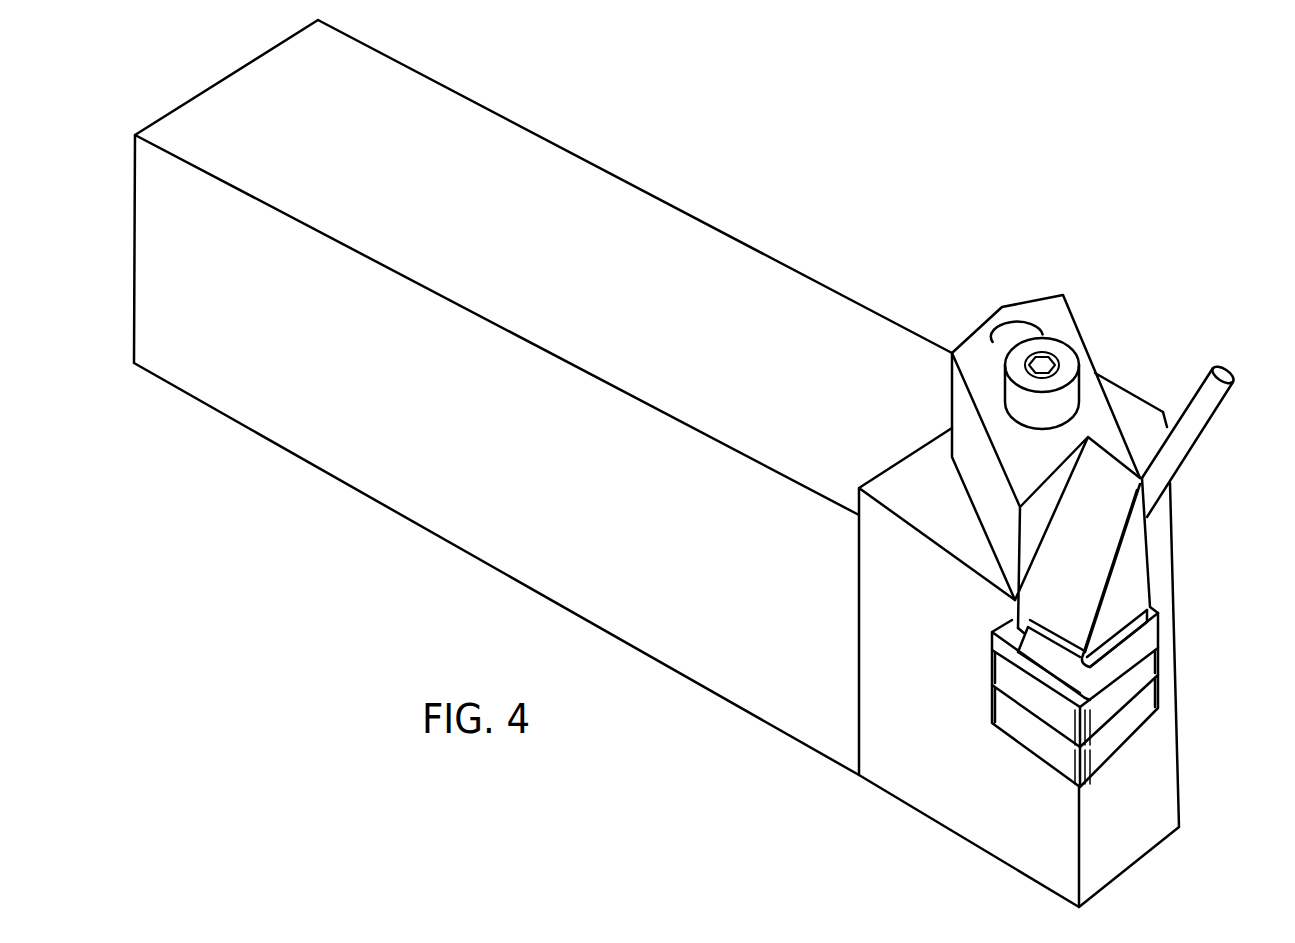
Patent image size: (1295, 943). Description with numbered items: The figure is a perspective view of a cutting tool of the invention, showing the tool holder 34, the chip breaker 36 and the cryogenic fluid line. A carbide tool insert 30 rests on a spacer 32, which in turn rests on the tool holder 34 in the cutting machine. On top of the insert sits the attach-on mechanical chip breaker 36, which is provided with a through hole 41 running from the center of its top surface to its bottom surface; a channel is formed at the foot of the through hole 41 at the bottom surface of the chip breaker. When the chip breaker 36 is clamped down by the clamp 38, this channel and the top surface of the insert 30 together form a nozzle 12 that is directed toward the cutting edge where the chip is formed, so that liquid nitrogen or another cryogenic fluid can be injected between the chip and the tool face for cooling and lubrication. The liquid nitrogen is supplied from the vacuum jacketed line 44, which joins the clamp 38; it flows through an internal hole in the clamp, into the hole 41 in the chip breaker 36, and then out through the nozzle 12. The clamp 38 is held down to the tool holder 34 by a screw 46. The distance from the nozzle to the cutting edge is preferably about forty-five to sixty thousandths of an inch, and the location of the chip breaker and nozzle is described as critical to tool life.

The nozzle 12 is at (1073, 707).
The carbide tool insert 30 is at (1152, 665).
The spacer 32 is at (1148, 703).
The tool holder 34 is at (568, 153).
The attach-on mechanical chip breaker 36 is at (1150, 632).
The clamp 38 is at (1147, 563).
The through hole 41 is at (1078, 687).
The vacuum jacketed line 44 is at (1220, 406).
The screw 46 is at (1072, 358).